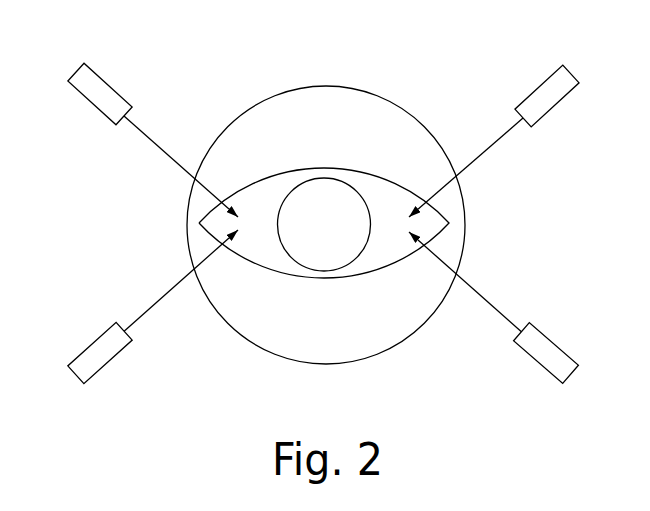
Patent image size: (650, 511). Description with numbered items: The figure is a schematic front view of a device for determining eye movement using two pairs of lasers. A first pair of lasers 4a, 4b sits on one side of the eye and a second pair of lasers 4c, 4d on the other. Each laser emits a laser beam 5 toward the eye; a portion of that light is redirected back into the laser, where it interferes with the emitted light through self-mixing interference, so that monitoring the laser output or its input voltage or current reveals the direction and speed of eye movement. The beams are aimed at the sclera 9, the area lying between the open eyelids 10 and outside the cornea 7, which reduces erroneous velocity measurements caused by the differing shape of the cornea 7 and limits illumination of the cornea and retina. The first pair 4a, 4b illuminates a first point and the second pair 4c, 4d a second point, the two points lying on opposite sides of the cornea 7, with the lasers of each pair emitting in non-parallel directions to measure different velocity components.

The open eyelids 10 is at (392, 157).
The sclera 9 is at (267, 240).
The cornea 7 is at (331, 232).
The laser beam 5 is at (466, 167).
The first laser of the first pair of lasers 4a is at (555, 88).
The second laser of the first pair of lasers 4b is at (552, 357).
The first laser of the second pair of lasers 4c is at (100, 348).
The second laser of the second pair of lasers 4d is at (98, 88).